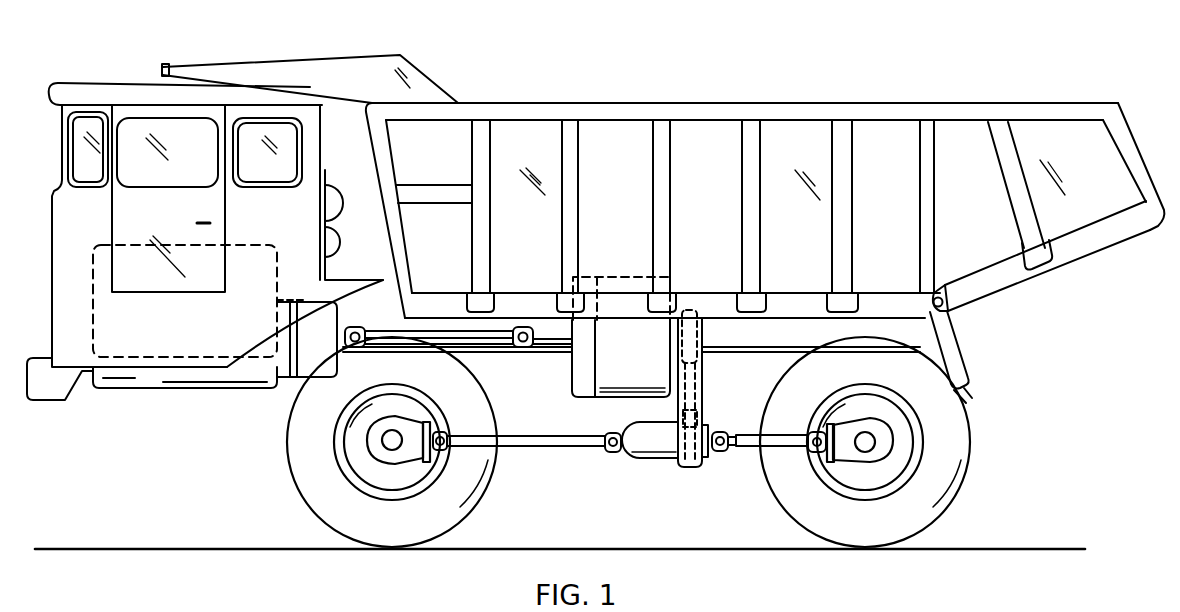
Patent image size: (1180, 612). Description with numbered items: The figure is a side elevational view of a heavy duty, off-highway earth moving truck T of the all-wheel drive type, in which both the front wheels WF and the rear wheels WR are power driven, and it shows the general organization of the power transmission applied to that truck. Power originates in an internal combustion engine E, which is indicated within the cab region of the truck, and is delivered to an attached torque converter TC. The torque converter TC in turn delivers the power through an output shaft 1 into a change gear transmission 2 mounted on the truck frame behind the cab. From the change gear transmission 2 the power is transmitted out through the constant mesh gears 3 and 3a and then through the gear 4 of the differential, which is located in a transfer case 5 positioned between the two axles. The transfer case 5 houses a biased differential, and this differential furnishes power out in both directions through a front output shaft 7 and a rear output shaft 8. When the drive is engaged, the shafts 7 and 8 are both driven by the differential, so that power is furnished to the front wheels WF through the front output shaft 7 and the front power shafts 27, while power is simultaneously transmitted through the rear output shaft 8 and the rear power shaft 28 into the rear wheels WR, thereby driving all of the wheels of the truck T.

The earth moving truck T is at (680, 96).
The internal combustion engine E is at (93, 276).
The torque converter TC is at (305, 302).
The front wheels WF is at (290, 473).
The rear wheels WR is at (968, 462).
The output shaft 1 is at (490, 345).
The change gear transmission 2 is at (572, 387).
The constant mesh gear 3 is at (700, 339).
The constant mesh gear 3a is at (697, 386).
The gear of the differential 4 is at (700, 425).
The transfer case 5 is at (660, 457).
The front output shaft 7 is at (620, 428).
The rear output shaft 8 is at (710, 455).
The front power shafts 27 is at (540, 444).
The rear power shaft 28 is at (798, 446).